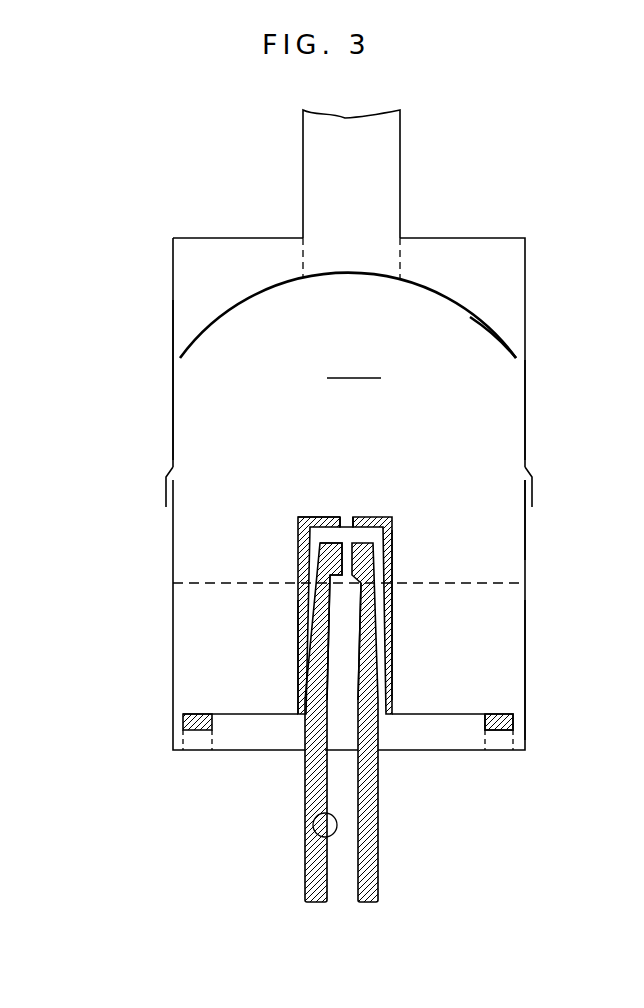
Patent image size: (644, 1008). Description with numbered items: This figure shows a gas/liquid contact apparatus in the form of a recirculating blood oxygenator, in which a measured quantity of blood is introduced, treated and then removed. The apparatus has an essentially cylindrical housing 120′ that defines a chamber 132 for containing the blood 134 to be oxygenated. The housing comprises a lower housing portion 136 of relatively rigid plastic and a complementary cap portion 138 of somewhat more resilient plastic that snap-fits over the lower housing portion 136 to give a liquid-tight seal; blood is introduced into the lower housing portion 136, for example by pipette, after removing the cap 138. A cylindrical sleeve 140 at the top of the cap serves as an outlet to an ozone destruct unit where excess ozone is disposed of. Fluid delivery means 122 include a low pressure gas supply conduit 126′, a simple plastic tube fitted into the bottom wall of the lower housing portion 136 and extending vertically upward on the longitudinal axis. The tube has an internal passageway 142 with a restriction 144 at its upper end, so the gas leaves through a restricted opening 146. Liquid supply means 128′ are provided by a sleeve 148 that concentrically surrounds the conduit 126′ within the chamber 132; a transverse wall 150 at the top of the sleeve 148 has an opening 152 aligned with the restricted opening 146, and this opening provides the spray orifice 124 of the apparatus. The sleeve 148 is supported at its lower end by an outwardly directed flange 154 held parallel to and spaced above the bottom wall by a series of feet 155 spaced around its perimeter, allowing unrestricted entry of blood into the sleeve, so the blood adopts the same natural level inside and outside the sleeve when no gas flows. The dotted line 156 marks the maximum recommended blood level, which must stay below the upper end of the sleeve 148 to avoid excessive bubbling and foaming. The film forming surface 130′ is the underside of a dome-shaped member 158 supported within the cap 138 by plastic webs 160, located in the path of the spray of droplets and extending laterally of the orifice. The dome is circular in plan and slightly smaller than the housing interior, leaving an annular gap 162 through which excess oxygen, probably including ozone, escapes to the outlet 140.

The housing 120′ is at (530, 277).
The fluid delivery means 122 is at (287, 538).
The spray orifice 124 is at (351, 511).
The gas supply conduit 126′ is at (393, 849).
The liquid supply means 128′ is at (397, 562).
The film forming surface 130′ is at (489, 323).
The chamber 132 is at (354, 363).
The blood 134 is at (498, 660).
The lower housing portion 136 is at (530, 516).
The cap portion 138 is at (525, 427).
The cylindrical sleeve 140 is at (383, 192).
The internal passageway 142 is at (314, 838).
The restriction 144 is at (322, 558).
The restricted opening 146 is at (347, 592).
The sleeve 148 is at (298, 653).
The transverse wall 150 is at (311, 515).
The opening 152 is at (343, 513).
The flange 154 is at (447, 715).
The feet 155 is at (184, 723).
The maximum recommended blood level 156 is at (200, 584).
The dome-shaped member 158 is at (241, 302).
The plastic webs 160 is at (314, 263).
The annular gap 162 is at (173, 383).